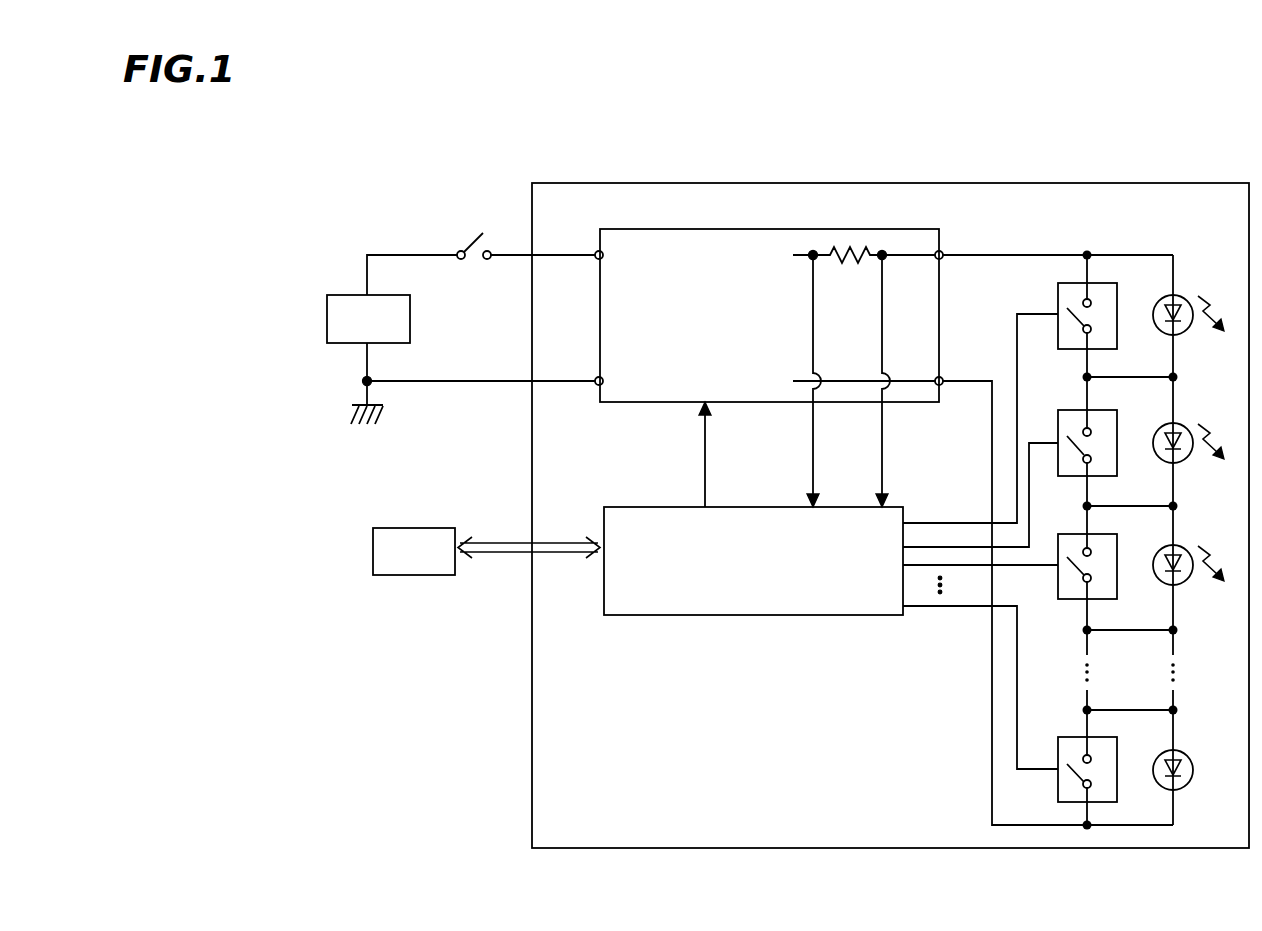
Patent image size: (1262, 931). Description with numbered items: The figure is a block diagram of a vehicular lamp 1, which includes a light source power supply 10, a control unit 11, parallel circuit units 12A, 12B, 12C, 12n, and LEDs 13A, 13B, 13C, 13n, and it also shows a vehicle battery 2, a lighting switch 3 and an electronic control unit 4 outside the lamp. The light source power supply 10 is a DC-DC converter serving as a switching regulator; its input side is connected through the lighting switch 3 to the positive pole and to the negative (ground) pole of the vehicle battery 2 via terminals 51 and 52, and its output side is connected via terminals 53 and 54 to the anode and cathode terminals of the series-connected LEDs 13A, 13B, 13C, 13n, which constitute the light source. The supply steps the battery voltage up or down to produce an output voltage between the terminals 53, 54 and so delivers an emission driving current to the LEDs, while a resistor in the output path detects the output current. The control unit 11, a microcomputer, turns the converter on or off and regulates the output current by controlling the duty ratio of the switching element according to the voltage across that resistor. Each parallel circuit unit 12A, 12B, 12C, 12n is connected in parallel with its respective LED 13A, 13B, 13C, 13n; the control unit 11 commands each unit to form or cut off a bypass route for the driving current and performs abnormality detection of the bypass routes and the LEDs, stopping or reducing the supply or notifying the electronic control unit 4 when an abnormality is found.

The vehicular lamp 1 is at (913, 183).
The vehicle battery 2 is at (327, 305).
The lighting switch 3 is at (471, 228).
The electronic control unit (ECU) 4 is at (414, 575).
The light source power supply 10 is at (766, 229).
The control unit 11 is at (806, 616).
The parallel circuit unit 12A is at (1058, 297).
The parallel circuit unit 12B is at (1062, 410).
The parallel circuit unit 12C is at (1072, 600).
The parallel circuit unit 12n is at (1065, 776).
The LED 13A is at (1186, 301).
The LED 13B is at (1187, 429).
The LED 13C is at (1187, 551).
The LED 13n is at (1188, 782).
The terminal 51 is at (597, 252).
The terminal 52 is at (597, 379).
The terminal 53 is at (942, 253).
The terminal 54 is at (942, 379).